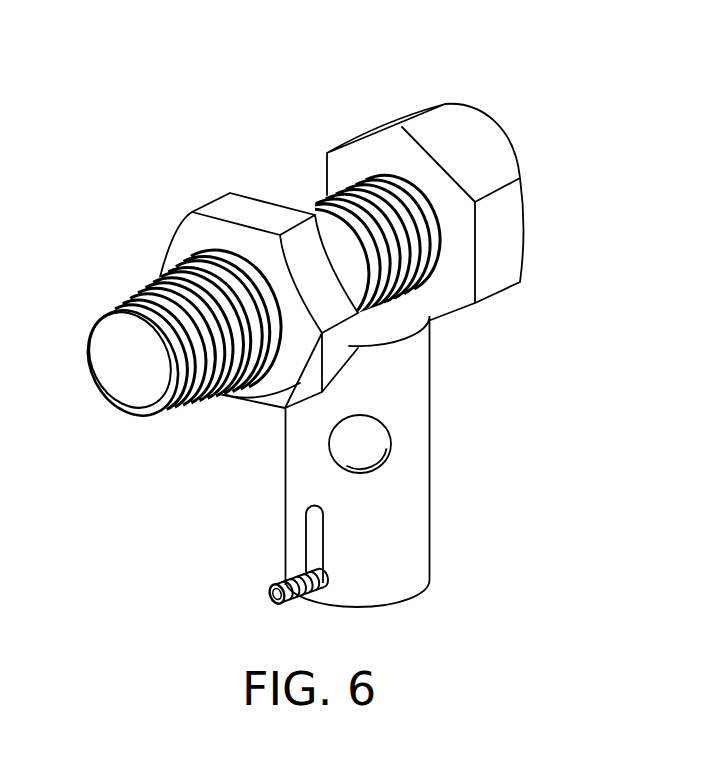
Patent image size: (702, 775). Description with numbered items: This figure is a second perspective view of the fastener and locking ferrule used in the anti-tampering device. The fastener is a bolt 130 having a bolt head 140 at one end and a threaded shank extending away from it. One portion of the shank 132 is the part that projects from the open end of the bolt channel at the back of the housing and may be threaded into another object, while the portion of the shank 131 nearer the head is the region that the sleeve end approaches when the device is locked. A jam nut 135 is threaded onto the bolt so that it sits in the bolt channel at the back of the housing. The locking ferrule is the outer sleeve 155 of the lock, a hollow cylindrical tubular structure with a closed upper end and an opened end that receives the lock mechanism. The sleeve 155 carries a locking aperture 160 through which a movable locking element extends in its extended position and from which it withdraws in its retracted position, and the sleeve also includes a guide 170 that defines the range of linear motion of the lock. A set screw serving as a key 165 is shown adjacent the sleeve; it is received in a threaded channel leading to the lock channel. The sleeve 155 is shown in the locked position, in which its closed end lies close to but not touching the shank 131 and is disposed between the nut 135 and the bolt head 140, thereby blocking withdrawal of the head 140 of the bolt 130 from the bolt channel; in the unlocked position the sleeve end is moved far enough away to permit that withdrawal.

The bolt 130 is at (133, 283).
The shank 131 is at (205, 405).
The shank 132 is at (130, 360).
The jam nut 135 is at (257, 195).
The bolt head 140 is at (452, 143).
The outer sleeve 155 is at (390, 542).
The locking aperture 160 is at (366, 444).
The key 165 is at (268, 596).
The guide 170 is at (305, 542).